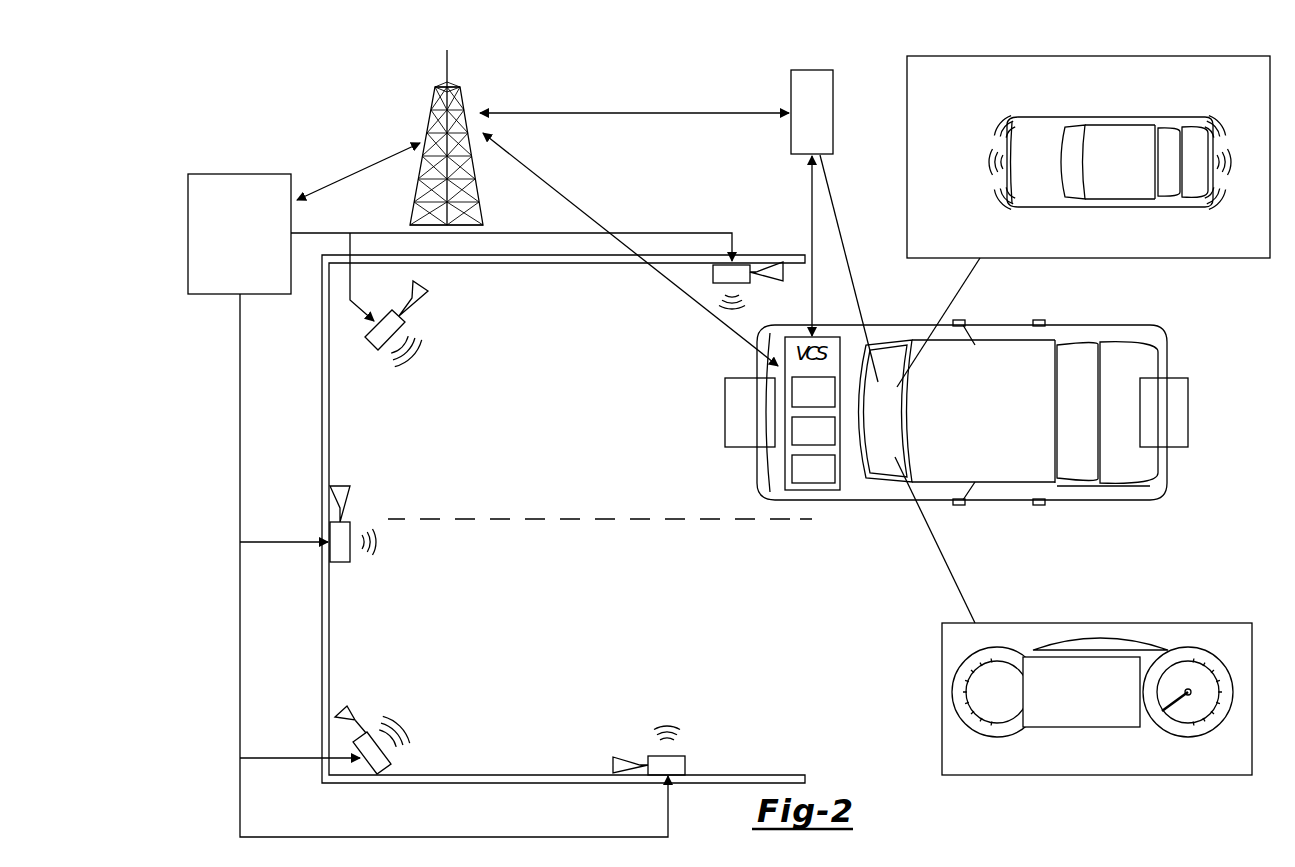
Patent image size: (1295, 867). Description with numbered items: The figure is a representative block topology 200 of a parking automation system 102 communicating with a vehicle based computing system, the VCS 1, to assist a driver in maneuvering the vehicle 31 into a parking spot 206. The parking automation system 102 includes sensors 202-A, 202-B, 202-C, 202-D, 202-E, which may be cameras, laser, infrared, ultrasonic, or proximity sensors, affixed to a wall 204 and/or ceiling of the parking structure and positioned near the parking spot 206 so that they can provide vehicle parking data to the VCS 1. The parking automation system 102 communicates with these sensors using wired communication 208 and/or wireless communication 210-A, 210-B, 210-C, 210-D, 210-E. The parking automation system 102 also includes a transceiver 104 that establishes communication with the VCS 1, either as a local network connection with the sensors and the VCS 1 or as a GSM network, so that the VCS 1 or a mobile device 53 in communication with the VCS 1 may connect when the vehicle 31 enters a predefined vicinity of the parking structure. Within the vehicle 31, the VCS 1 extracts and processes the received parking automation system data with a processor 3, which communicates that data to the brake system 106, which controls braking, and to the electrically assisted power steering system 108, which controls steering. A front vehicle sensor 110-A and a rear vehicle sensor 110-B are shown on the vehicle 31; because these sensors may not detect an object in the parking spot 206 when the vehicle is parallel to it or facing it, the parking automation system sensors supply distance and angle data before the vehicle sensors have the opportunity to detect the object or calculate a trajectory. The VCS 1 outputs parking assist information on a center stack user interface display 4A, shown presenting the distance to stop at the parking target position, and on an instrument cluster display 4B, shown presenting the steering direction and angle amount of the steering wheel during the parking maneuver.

The block topology 200 is at (260, 74).
The parking automation system 102 is at (240, 174).
The transceiver 104 is at (433, 100).
The mobile device 53 is at (802, 138).
The wired communication 208 is at (240, 614).
The wall 204 is at (543, 776).
The parking spot 206 is at (497, 420).
The sensor 202-A is at (713, 276).
The wireless communication 210-A is at (779, 262).
The sensor 202-B is at (368, 347).
The wireless communication 210-B is at (428, 288).
The sensor 202-C is at (345, 562).
The wireless communication 210-C is at (348, 492).
The sensor 202-D is at (388, 768).
The wireless communication 210-D is at (348, 706).
The sensor 202-E is at (686, 765).
The wireless communication 210-E is at (627, 757).
The vehicle based computing system (VCS) 1 is at (798, 333).
The vehicle 31 is at (1003, 503).
The processor 3 is at (835, 390).
The brake system 106 is at (835, 430).
The electrically assisted power steering system (EPS) 108 is at (792, 468).
The front vehicle sensor 110-A is at (725, 412).
The rear vehicle sensor 110-B is at (1189, 409).
The center stack user interface display 4A is at (1093, 258).
The instrument cluster display 4B is at (1093, 623).